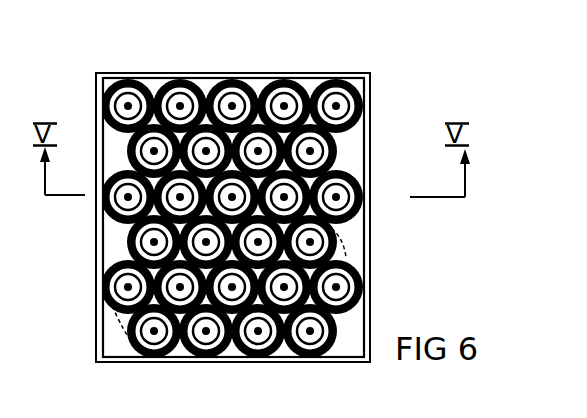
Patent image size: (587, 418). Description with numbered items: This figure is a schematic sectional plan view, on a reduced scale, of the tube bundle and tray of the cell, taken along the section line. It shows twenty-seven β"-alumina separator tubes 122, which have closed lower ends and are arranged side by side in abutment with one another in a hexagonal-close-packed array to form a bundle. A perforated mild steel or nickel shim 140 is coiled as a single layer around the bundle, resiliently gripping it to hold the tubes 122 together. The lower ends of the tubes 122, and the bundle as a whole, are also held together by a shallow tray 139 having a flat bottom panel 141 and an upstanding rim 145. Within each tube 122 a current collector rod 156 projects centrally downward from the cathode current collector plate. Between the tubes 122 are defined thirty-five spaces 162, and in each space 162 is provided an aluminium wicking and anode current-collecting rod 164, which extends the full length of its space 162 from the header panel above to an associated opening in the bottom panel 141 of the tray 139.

The β"-alumina separator tube 122 is at (338, 100).
The tray 139 is at (380, 96).
The shim 140 is at (370, 139).
The bottom panel 141 is at (352, 244).
The upstanding rim 145 is at (366, 308).
The current collector rod 156 is at (283, 95).
The space 162 is at (266, 345).
The wicking and anode current-collecting rod 164 is at (140, 255).